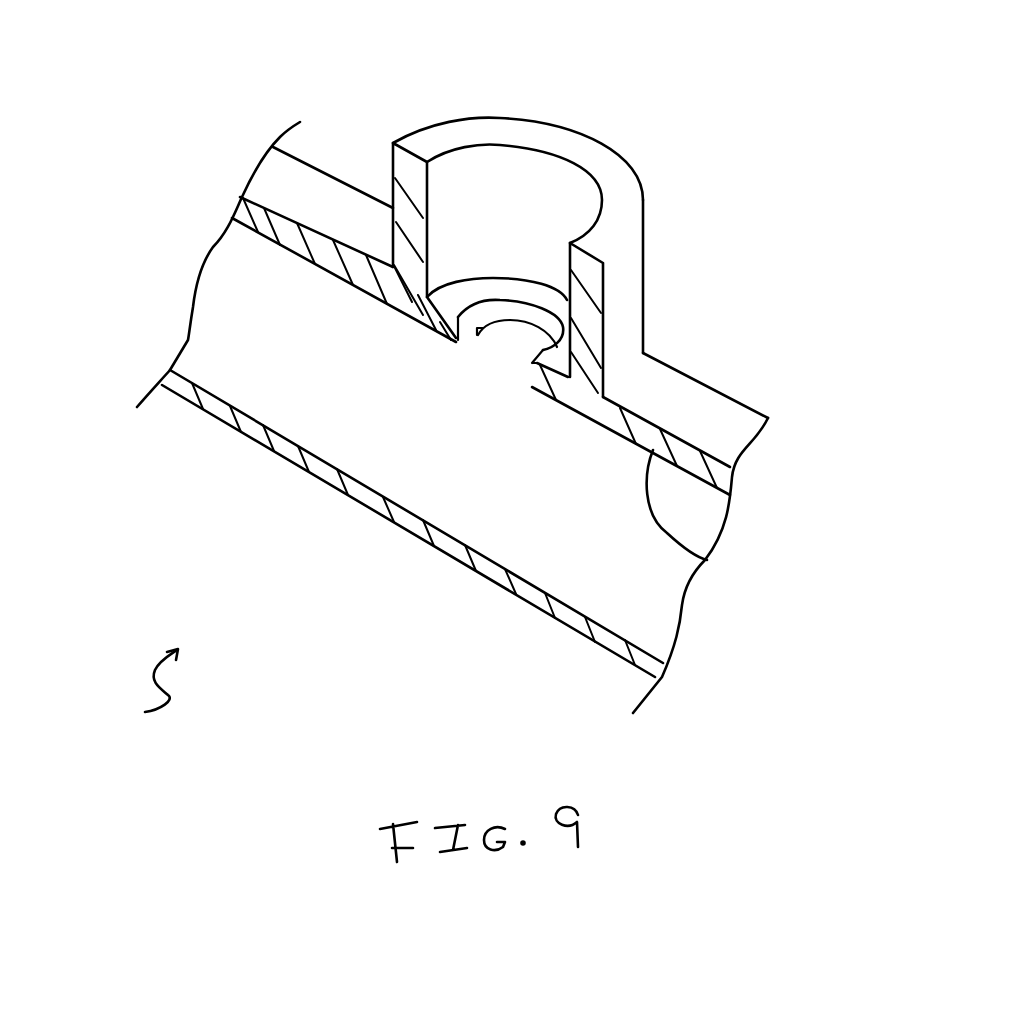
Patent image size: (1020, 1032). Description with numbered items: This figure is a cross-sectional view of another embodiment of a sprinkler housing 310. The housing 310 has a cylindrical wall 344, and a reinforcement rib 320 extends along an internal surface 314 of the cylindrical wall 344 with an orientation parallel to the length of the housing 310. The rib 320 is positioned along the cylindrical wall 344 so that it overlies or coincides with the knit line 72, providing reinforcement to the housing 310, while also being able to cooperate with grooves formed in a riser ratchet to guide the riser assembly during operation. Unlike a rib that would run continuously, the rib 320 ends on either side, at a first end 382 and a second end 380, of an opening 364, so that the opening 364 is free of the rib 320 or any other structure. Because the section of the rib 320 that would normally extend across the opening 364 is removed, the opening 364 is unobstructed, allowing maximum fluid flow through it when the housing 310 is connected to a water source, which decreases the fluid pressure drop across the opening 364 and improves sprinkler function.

The housing 310 is at (110, 714).
The internal surface 314 is at (265, 390).
The reinforcement rib 320 is at (450, 347).
The cylindrical wall 344 is at (716, 420).
The opening 364 is at (517, 333).
The rib end 380 is at (470, 347).
The rib end 382 is at (536, 360).
The knit line 72 is at (641, 418).